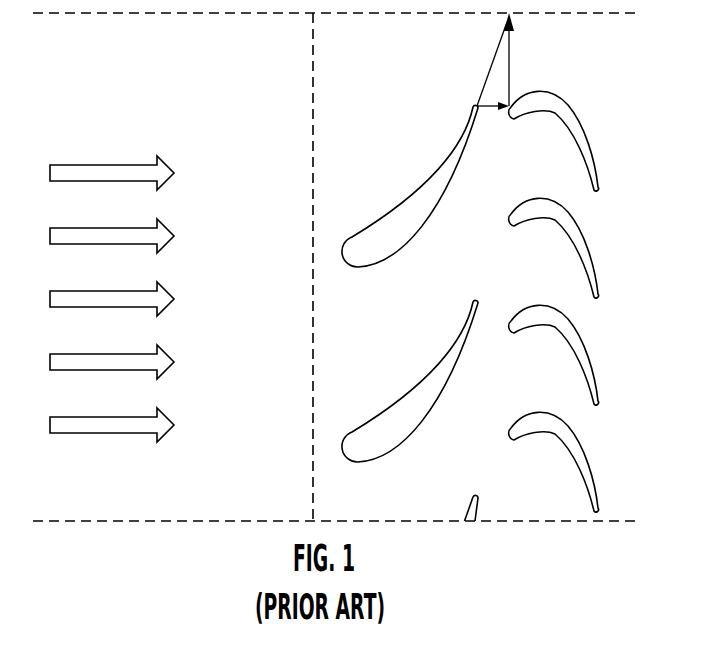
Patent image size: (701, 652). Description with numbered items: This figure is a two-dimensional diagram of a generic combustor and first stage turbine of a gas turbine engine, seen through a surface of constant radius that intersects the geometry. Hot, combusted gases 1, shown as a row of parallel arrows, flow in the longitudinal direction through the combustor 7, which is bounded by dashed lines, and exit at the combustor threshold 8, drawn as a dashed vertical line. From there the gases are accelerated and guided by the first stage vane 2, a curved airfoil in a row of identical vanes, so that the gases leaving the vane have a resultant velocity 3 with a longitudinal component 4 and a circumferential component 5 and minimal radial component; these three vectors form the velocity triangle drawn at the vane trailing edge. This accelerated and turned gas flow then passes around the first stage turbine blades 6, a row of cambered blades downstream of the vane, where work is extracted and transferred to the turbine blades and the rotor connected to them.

The hot combusted gases 1 is at (110, 161).
The first stage vane 2 is at (400, 203).
The resultant velocity 3 is at (483, 60).
The longitudinal component 4 is at (487, 112).
The circumferential component 5 is at (512, 62).
The first stage turbine blades 6 is at (592, 242).
The combustor 7 is at (287, 18).
The combustor threshold 8 is at (310, 173).